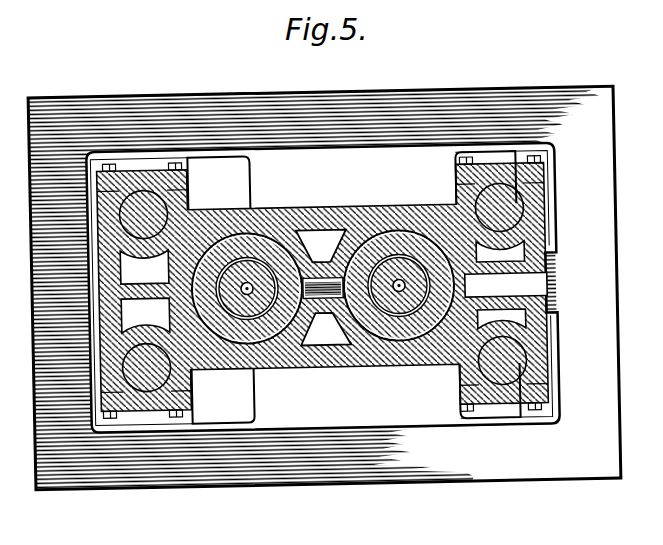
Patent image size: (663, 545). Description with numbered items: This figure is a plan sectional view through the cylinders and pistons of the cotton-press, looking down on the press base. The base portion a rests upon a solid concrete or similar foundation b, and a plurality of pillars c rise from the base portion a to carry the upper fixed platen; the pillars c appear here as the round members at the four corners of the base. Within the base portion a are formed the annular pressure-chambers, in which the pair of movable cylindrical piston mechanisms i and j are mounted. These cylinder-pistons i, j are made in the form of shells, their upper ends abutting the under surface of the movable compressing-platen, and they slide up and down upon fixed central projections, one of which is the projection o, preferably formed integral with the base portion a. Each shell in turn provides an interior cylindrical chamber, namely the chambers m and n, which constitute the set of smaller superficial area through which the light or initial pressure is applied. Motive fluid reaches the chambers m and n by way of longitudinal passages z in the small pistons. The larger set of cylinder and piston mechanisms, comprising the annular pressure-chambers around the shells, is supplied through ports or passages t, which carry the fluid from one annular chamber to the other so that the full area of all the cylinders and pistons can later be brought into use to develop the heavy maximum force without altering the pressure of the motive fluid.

The base portion a is at (322, 222).
The foundation b is at (337, 478).
The pillars c is at (145, 211).
The movable cylindrical piston mechanism i is at (267, 320).
The movable cylindrical piston mechanism j is at (394, 326).
The interior cylindrical chamber m is at (244, 242).
The interior cylindrical chamber n is at (400, 242).
The fixed central projection o is at (239, 288).
The ports or passages t is at (322, 298).
The longitudinal passages z is at (244, 292).